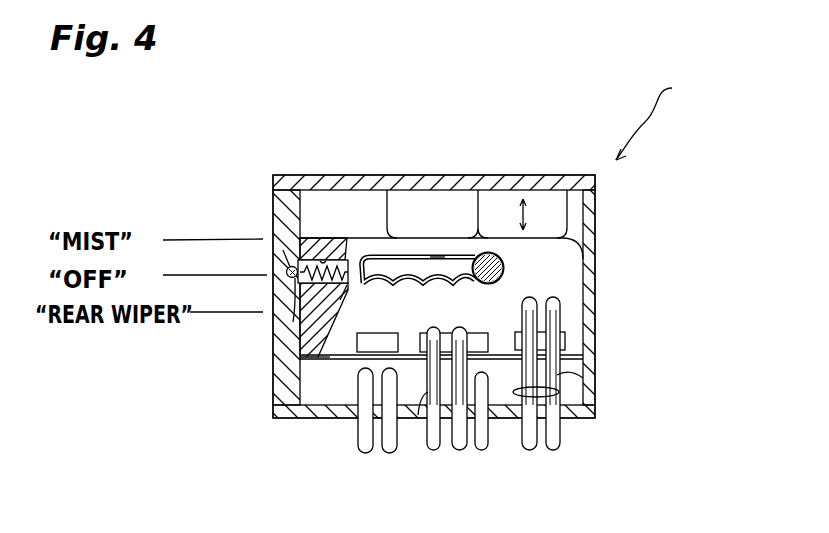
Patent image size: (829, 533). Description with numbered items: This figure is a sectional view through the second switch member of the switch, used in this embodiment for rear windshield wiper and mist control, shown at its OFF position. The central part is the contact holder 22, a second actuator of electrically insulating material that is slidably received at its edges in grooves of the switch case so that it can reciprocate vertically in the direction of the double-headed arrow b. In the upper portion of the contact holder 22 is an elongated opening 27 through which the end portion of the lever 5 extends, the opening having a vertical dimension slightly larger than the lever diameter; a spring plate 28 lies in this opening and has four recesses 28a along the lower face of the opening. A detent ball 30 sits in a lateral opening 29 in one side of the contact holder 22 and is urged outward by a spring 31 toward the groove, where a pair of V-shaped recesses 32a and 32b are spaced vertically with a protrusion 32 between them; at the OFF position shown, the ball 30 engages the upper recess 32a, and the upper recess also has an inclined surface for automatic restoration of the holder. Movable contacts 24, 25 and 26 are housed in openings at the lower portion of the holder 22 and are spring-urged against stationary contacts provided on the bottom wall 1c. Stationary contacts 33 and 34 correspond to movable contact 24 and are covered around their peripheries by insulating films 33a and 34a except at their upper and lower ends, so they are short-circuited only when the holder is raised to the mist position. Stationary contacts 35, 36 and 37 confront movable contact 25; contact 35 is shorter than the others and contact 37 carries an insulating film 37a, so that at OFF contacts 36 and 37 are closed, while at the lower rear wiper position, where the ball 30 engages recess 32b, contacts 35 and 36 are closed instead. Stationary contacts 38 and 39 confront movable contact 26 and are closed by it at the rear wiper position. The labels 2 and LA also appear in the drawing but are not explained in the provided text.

The housing 2 is at (287, 180).
The contact holder 22 is at (553, 187).
The bottom wall 1c is at (315, 413).
The lever 5 is at (480, 242).
The lever assembly LA is at (666, 117).
The double-headed arrow b is at (513, 213).
The upper recess 32a is at (305, 190).
The protrusion 32 is at (292, 277).
The lower recess 32b is at (293, 322).
The lateral opening 29 is at (312, 278).
The detent ball 30 is at (283, 250).
The recesses 28a is at (387, 253).
The elongated opening 27 is at (433, 262).
The movable contact 26 is at (380, 346).
The movable contact 25 is at (478, 343).
The movable contact 24 is at (567, 339).
The spring plate 28 is at (312, 325).
The spring 31 is at (322, 348).
The stationary contact 39 is at (365, 433).
The stationary contact 38 is at (387, 437).
The stationary contact 37 is at (443, 325).
The insulating film 37a is at (418, 415).
The stationary contact 36 is at (460, 433).
The stationary contact 35 is at (480, 440).
The stationary contact 34 is at (531, 295).
The insulating film 34a is at (583, 392).
The stationary contact 33 is at (553, 298).
The insulating film 33a is at (583, 378).